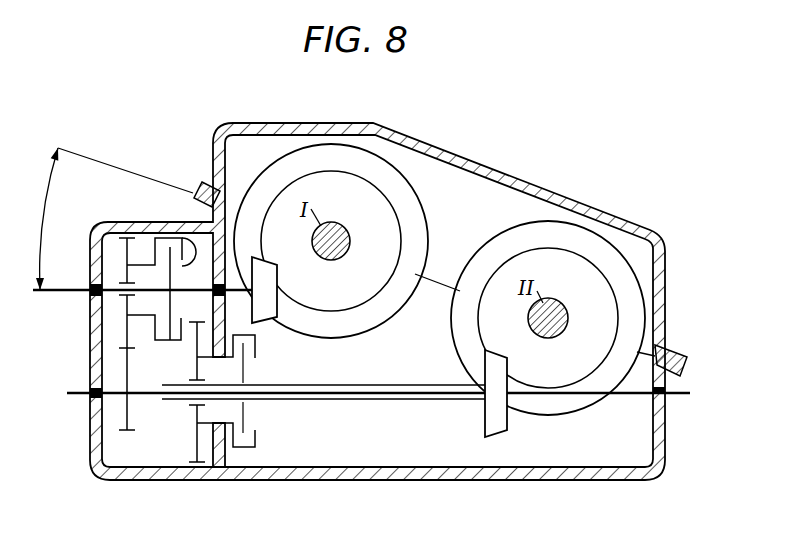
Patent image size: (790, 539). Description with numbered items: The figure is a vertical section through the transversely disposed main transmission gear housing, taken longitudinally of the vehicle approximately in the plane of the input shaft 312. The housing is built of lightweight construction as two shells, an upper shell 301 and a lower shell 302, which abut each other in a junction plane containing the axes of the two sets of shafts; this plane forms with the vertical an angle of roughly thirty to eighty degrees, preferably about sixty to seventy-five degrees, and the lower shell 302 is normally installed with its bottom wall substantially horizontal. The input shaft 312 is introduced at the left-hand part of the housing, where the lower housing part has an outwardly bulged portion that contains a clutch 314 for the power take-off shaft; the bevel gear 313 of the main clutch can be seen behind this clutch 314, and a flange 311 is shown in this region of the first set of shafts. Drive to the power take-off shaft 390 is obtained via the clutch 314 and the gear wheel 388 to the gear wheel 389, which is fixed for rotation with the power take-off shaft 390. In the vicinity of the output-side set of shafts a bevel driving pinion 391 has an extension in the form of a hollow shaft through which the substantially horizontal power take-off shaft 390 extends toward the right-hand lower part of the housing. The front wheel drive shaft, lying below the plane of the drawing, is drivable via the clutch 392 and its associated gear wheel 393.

The upper shell of the housing 301 is at (500, 170).
The lower shell of the housing 302 is at (455, 481).
The flange 311 is at (278, 271).
The input shaft 312 is at (77, 294).
The bevel gear of the main clutch 313 is at (419, 201).
The clutch for the power take-off shaft 314 is at (190, 233).
The gear wheel 388 is at (125, 328).
The gear wheel 389 is at (128, 366).
The power take-off shaft 390 is at (678, 397).
The bevel driving pinion 391 is at (503, 436).
The clutch 392 is at (243, 413).
The gear wheel 393 is at (197, 441).